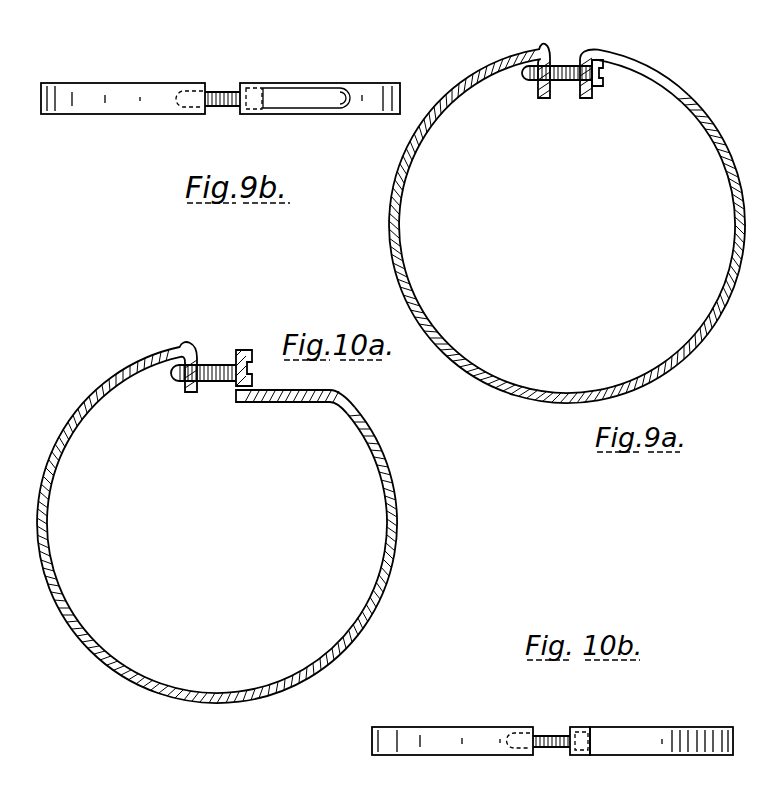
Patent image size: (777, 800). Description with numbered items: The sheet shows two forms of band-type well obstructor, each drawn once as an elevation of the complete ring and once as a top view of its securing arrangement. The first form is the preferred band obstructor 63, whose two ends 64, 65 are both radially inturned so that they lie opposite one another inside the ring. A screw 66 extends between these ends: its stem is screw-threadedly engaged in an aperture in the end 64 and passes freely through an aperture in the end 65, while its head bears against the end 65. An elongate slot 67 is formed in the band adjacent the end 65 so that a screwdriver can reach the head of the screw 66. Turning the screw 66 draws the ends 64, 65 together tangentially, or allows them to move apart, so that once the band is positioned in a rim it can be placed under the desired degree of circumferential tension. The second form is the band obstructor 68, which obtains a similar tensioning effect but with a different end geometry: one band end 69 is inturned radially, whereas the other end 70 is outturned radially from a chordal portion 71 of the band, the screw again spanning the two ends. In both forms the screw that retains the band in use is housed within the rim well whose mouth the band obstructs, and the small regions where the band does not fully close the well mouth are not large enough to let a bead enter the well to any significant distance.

In FIG. 9B, the band obstructor 63 is at (158, 118).
In FIG. 9A, the band obstructor 63 is at (724, 132).
In FIG. 9A, the band end 64 is at (545, 99).
In FIG. 9A, the band end 65 is at (586, 99).
In FIG. 9B, the screw 66 is at (228, 118).
In FIG. 9A, the screw 66 is at (563, 66).
In FIG. 9B, the elongate slot 67 is at (308, 116).
In FIG. 9A, the elongate slot 67 is at (668, 78).
In FIG. 10A, the band obstructor 68 is at (398, 541).
In FIG. 10B, the band obstructor 68 is at (683, 724).
In FIG. 10A, the band end 69 is at (190, 394).
In FIG. 10B, the band end 69 is at (527, 733).
In FIG. 10A, the band end 70 is at (233, 390).
In FIG. 10B, the band end 70 is at (578, 729).
In FIG. 10A, the chordal portion 71 is at (303, 404).
In FIG. 10B, the chordal portion 71 is at (635, 735).